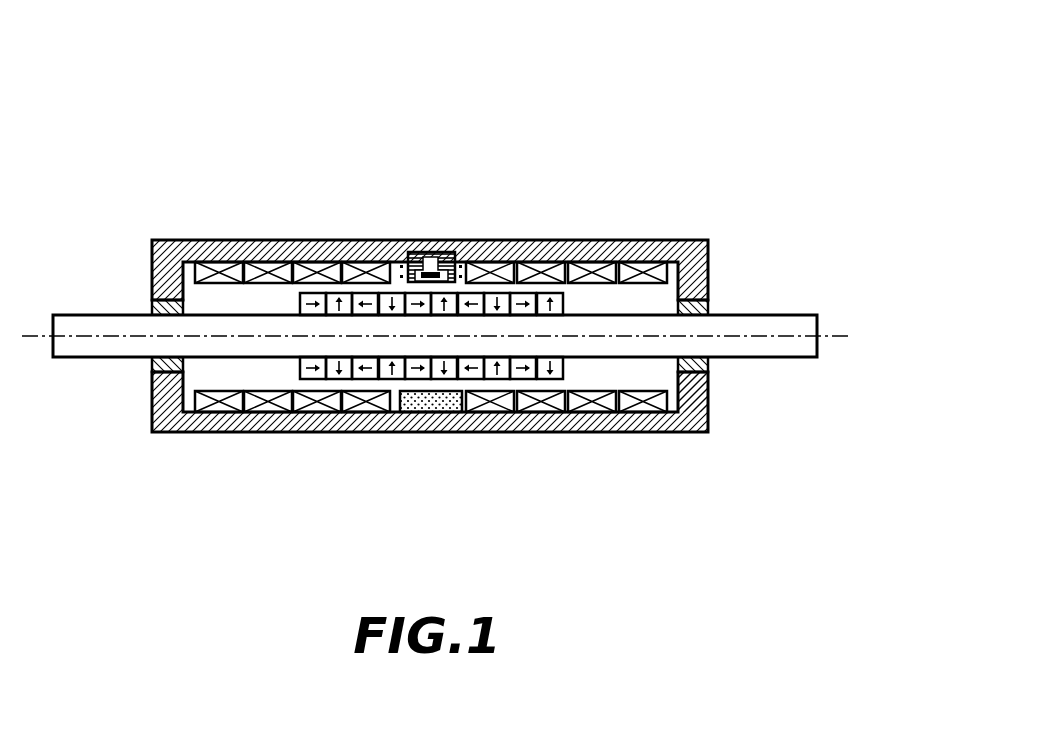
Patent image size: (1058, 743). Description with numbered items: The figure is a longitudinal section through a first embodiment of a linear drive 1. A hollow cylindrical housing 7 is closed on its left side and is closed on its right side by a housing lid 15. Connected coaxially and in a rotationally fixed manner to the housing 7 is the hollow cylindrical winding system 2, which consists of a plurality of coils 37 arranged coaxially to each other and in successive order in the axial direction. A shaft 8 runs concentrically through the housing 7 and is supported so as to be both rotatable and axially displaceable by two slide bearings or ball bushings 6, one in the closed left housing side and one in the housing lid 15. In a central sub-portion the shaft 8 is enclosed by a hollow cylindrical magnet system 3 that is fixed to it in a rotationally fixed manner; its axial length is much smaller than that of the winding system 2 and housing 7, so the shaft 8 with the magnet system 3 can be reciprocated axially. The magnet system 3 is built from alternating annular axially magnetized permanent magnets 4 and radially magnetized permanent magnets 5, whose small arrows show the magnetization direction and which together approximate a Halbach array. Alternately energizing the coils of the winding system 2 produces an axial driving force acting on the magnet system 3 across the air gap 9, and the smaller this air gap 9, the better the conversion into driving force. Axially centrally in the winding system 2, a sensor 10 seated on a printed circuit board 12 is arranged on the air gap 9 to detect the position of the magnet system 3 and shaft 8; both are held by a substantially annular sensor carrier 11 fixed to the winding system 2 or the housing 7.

The linear drive 1 is at (632, 172).
The winding system 2 is at (226, 271).
The magnet system 3 is at (553, 381).
The axially magnetized permanent magnets 4 is at (319, 292).
The radially magnetized permanent magnets 5 is at (332, 377).
The slide bearings or ball bushings 6 is at (153, 307).
The housing 7 is at (216, 251).
The shaft 8 is at (106, 343).
The air gap 9 is at (541, 292).
The sensor 10 is at (435, 262).
The sensor carrier 11 is at (457, 250).
The printed circuit board 12 is at (417, 251).
The housing lid 15 is at (688, 394).
The coils 37 is at (596, 270).